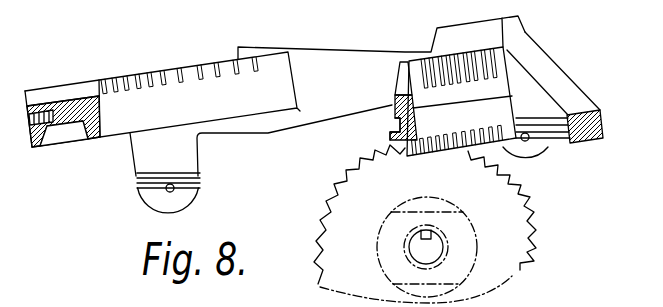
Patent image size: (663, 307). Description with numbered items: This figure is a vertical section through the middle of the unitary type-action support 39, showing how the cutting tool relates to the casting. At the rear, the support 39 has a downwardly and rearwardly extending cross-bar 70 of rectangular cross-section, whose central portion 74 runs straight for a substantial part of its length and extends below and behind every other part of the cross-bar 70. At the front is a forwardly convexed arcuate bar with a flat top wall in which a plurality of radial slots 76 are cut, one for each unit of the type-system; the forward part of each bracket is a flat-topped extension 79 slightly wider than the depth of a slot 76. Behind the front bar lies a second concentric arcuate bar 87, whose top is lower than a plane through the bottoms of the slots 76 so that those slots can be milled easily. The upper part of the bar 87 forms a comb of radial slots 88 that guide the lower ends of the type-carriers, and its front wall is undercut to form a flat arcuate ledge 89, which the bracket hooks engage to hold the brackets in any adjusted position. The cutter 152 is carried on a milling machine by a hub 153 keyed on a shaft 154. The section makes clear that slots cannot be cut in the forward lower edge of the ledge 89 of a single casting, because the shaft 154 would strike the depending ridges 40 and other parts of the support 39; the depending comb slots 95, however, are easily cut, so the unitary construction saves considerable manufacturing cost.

The radial slots 76 is at (67, 85).
The flat-topped extension 79 is at (33, 149).
The type-action support 39 is at (268, 122).
The depending ridges 40 is at (200, 190).
The depending comb slots 95 is at (467, 132).
The radial slots 88 is at (400, 78).
The second concentric arcuate bar 87 is at (393, 102).
The flat arcuate ledge 89 is at (395, 120).
The cross-bar 70 is at (572, 92).
The central portion of the cross-bar 74 is at (582, 145).
The cutter 152 is at (537, 223).
The hub 153 is at (476, 248).
The shaft 154 is at (440, 238).